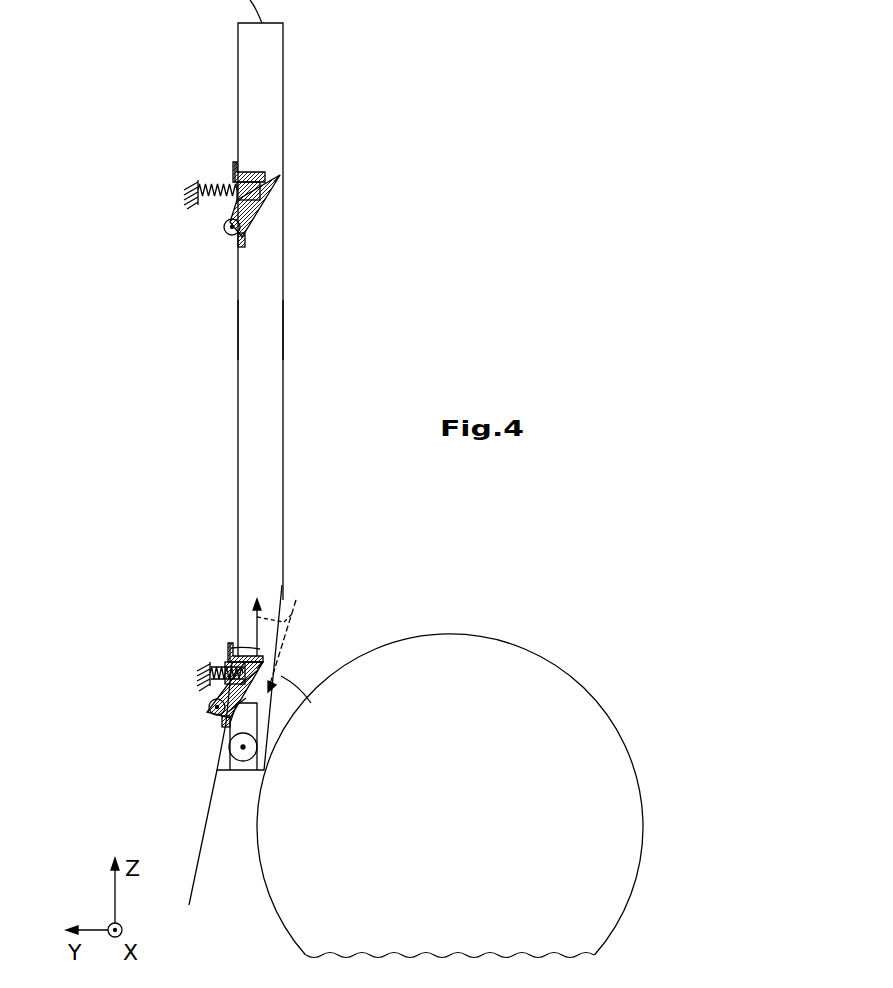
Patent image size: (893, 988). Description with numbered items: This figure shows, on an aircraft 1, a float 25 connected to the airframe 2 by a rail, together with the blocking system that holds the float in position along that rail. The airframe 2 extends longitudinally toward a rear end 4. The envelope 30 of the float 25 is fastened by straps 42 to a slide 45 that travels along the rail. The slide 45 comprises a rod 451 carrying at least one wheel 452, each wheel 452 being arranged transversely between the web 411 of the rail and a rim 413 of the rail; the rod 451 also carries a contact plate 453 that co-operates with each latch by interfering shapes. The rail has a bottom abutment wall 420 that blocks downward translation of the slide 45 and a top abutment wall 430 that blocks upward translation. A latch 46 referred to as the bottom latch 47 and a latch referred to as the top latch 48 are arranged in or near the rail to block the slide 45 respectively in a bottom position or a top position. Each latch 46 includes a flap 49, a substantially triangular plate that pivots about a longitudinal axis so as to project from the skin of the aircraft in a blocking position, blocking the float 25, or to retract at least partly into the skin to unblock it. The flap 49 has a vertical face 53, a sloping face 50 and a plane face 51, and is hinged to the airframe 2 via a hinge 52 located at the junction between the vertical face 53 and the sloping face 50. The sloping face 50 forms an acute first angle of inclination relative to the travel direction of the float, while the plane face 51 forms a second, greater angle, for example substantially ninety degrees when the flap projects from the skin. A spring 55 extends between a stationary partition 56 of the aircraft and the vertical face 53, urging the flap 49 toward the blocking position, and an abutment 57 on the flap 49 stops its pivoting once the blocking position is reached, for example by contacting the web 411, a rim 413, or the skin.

The aircraft 1 is at (450, 206).
The airframe 2 is at (238, 385).
The rear end 4 is at (235, 745).
The float 25 is at (594, 692).
The envelope 30 is at (511, 773).
The straps 42 is at (247, 748).
The slide 45 is at (292, 674).
The latch 46 is at (227, 421).
The bottom latch 47 is at (182, 664).
The top latch 48 is at (140, 200).
The flap 49 is at (268, 172).
The sloping face 50 is at (258, 218).
The plane face 51 is at (257, 172).
The hinge 52 is at (232, 236).
The vertical face 53 is at (233, 175).
The spring 55 is at (213, 197).
The stationary partition 56 is at (194, 180).
The abutment 57 is at (246, 239).
The web 411 is at (238, 328).
The rim 413 is at (283, 328).
The bottom abutment wall 420 is at (212, 803).
The top abutment wall 430 is at (232, 0).
The rod 451 is at (224, 720).
The wheel 452 is at (222, 775).
The contact plate 453 is at (300, 705).